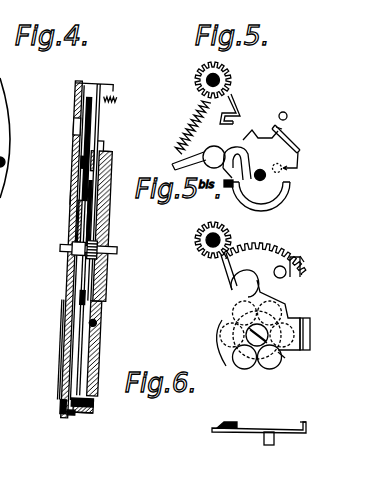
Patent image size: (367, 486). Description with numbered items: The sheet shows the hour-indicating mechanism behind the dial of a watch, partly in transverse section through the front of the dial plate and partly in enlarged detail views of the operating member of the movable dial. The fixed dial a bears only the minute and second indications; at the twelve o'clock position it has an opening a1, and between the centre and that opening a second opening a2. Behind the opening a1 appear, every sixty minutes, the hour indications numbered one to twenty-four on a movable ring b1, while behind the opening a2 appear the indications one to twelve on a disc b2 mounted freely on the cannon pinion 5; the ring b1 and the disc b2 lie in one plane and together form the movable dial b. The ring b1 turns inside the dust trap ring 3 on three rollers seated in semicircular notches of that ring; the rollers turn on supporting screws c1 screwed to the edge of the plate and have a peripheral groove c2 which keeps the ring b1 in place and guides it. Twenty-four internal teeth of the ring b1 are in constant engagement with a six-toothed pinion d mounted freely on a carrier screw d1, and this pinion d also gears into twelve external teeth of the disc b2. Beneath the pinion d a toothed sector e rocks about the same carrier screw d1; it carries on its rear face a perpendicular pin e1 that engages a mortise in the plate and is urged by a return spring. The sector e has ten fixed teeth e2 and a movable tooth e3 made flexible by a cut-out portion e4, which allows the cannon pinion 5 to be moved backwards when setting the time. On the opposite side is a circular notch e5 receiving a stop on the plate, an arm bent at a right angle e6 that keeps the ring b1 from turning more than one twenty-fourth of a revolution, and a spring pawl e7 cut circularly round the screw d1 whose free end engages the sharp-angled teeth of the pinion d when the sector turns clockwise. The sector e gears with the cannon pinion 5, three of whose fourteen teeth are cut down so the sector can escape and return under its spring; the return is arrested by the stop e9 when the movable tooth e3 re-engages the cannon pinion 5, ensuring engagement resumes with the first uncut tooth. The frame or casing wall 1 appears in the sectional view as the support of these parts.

In FIG. 4, the frame / casing wall 1 is at (109, 222).
In FIG. 4, the dust trap ring 3 is at (100, 410).
In FIG. 4, the cannon pinion 5 is at (97, 255).
In FIG. 5, the cannon pinion 5 is at (195, 82).
In FIG. 5a, the cannon pinion 5 is at (197, 250).
In FIG. 4, the fixed dial a is at (67, 298).
In FIG. 4, the opening a1 is at (75, 128).
In FIG. 4, the second opening a2 is at (71, 196).
In FIG. 4, the movable dial b is at (85, 172).
In FIG. 4, the movable ring b1 is at (86, 134).
In FIG. 4, the disc b2 is at (74, 228).
In FIG. 4, the spindle c is at (78, 163).
In FIG. 4, the supporting screws c1 is at (100, 404).
In FIG. 4, the peripheral groove c2 is at (82, 414).
In FIG. 4, the pinion d is at (64, 336).
In FIG. 5a, the pinion d is at (215, 330).
In FIG. 4, the carrier screw d1 is at (100, 322).
In FIG. 5, the carrier screw d1 is at (260, 180).
In FIG. 5a, the carrier screw d1 is at (246, 337).
In FIG. 4, the toothed sector e is at (90, 298).
In FIG. 5, the toothed sector e is at (271, 144).
In FIG. 5a, the toothed sector e is at (272, 288).
In FIG. 6, the toothed sector e is at (254, 428).
In FIG. 5, the perpendicular pin e1 is at (284, 168).
In FIG. 5a, the perpendicular pin e1 is at (283, 356).
In FIG. 5, the fixed teeth e2 is at (197, 128).
In FIG. 5, the movable tooth e3 is at (203, 154).
In FIG. 5, the cut-out portion e4 is at (185, 163).
In FIG. 5, the circular notch e5 is at (239, 103).
In FIG. 5, the arm bent at a right angle e6 is at (283, 129).
In FIG. 6, the arm bent at a right angle e6 is at (303, 422).
In FIG. 5, the spring pawl e7 is at (227, 188).
In FIG. 6, the spring pawl e7 is at (230, 423).
In FIG. 5, the stop e9 is at (280, 115).
In FIG. 5a, the stop e9 is at (300, 256).